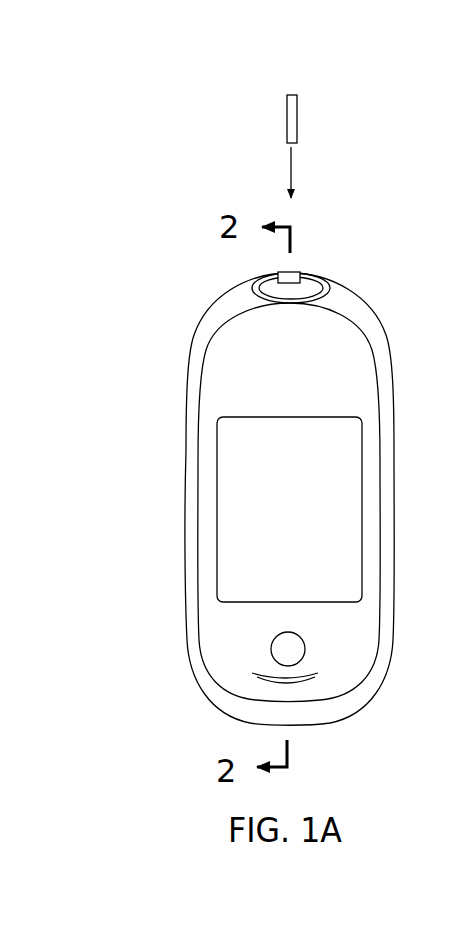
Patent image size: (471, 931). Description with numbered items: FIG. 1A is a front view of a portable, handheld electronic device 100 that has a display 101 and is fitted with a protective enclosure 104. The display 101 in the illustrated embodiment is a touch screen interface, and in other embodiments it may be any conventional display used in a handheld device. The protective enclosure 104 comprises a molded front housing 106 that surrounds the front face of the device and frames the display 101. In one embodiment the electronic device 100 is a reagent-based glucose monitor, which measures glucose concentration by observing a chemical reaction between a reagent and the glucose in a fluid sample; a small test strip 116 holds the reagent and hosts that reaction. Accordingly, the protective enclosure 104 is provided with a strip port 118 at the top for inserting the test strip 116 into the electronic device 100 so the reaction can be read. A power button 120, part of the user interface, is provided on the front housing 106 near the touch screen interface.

The electronic device 100 is at (257, 428).
The display 101 is at (348, 493).
The protective enclosure 104 is at (238, 499).
The front housing 106 is at (309, 474).
The test strip 116 is at (298, 120).
The strip port 118 is at (292, 272).
The power button 120 is at (273, 645).